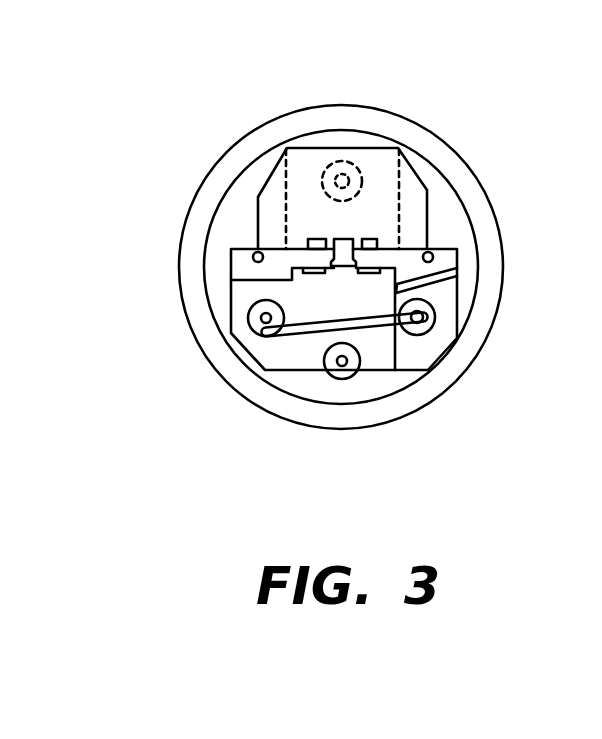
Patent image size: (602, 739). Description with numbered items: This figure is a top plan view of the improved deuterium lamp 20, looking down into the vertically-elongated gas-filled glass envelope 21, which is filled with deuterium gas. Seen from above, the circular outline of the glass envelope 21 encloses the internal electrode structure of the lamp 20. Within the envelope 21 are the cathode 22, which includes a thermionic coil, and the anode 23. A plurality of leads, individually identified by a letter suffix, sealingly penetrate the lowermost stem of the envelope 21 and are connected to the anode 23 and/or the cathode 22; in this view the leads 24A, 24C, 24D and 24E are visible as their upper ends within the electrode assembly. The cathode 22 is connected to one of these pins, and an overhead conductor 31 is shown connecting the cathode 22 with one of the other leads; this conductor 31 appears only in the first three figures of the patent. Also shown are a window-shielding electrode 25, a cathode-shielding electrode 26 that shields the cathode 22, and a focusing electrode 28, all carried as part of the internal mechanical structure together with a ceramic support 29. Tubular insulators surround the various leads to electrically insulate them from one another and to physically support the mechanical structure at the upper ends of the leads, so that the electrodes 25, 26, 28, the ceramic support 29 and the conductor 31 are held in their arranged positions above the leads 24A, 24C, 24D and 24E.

The deuterium lamp 20 is at (186, 101).
The glass envelope 21 is at (213, 190).
The cathode 22 is at (412, 322).
The anode 23 is at (387, 247).
The lead 24A is at (336, 150).
The lead 24C is at (248, 318).
The lead 24D is at (340, 372).
The lead 24E is at (430, 313).
The window-shielding electrode 25 is at (240, 294).
The cathode-shielding electrode 26 is at (455, 278).
The focusing electrode 28 is at (347, 267).
The ceramic support 29 is at (420, 217).
The overhead conductor 31 is at (373, 327).